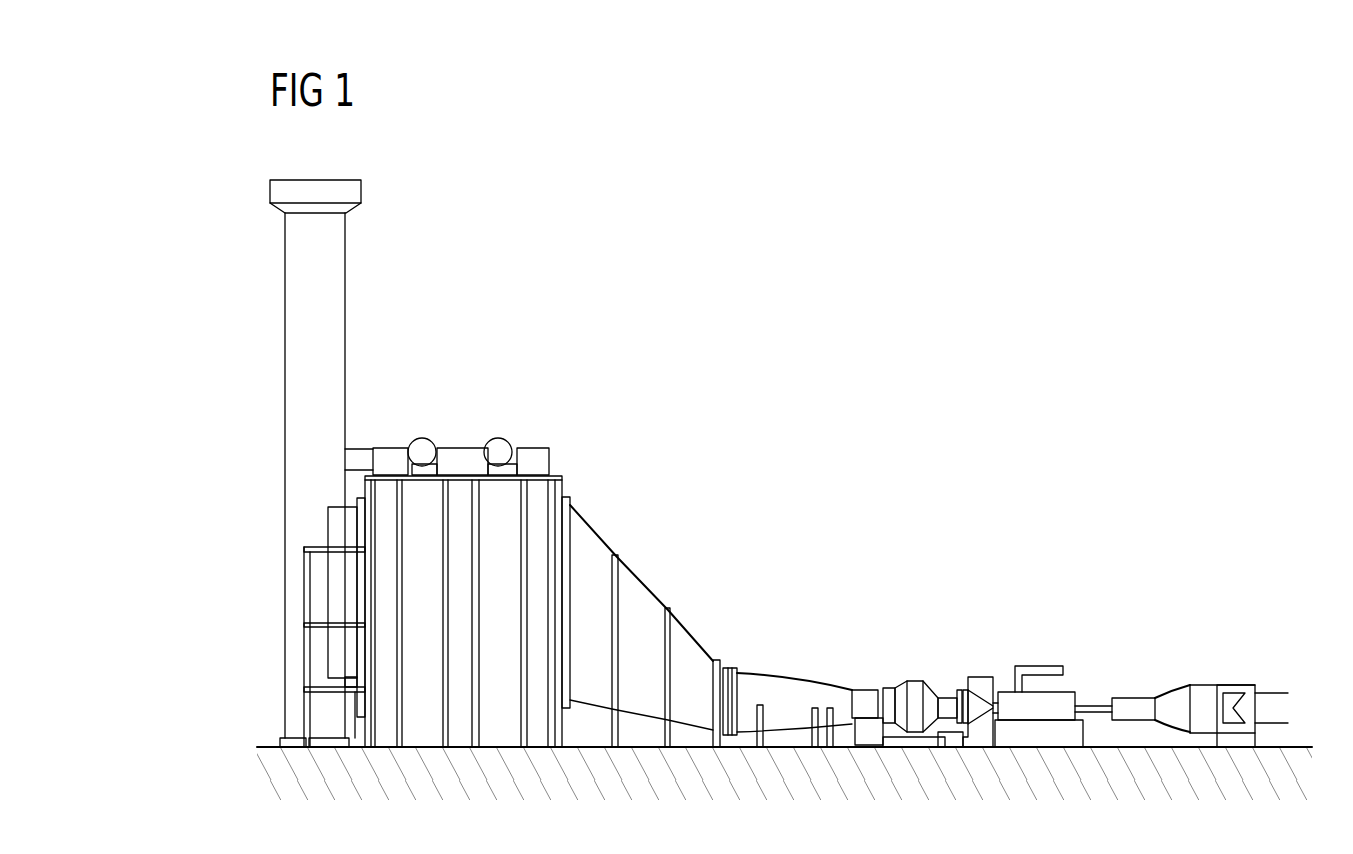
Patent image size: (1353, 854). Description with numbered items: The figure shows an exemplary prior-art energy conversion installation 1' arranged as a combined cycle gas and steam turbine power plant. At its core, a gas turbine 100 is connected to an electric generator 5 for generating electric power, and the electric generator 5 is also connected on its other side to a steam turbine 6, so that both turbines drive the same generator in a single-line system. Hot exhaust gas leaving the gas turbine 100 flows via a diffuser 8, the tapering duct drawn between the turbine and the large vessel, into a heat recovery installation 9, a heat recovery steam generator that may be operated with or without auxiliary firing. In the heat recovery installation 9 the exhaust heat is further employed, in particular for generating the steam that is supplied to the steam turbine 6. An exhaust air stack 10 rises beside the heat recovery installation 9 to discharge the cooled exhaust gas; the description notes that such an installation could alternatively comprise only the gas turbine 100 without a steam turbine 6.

The energy conversion installation 1' is at (784, 490).
The exhaust air stack 10 is at (357, 283).
The heat recovery installation 9 is at (465, 428).
The diffuser 8 is at (801, 670).
The gas turbine 100 is at (913, 667).
The electric generator 5 is at (1040, 691).
The steam turbine 6 is at (1167, 690).